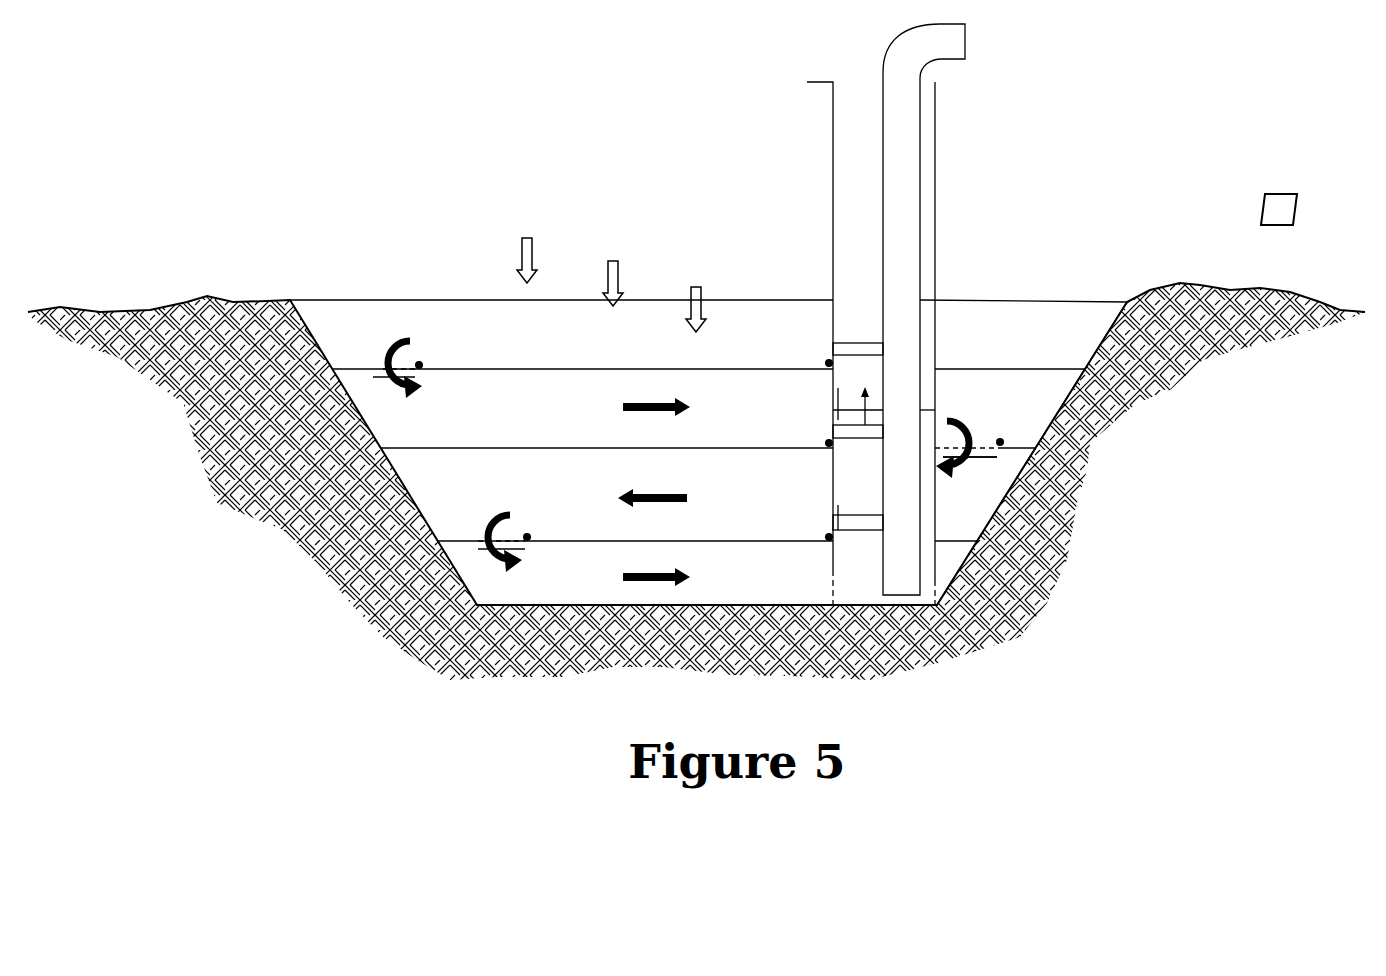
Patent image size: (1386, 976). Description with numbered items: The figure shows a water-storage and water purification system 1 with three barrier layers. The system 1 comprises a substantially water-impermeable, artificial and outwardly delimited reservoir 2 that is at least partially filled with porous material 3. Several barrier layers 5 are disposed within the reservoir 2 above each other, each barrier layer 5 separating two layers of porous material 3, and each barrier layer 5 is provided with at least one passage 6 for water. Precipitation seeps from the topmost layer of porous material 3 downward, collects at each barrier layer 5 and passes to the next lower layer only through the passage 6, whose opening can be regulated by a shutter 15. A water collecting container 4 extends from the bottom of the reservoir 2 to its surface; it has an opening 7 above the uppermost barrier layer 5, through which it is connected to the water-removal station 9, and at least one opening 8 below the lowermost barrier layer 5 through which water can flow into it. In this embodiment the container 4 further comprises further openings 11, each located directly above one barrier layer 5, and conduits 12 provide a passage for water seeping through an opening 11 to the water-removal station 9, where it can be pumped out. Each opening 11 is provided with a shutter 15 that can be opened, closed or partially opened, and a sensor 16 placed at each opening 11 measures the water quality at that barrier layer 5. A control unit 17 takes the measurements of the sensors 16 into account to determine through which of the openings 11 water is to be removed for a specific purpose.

The system 1 is at (290, 163).
The reservoir 2 is at (1103, 334).
The porous material 3 is at (1045, 394).
The water collecting container 4 is at (935, 160).
The barrier layer 5 is at (1000, 457).
The passage 6 is at (968, 458).
The opening 7 is at (935, 82).
The opening 8 is at (952, 572).
The water-removal station 9 is at (965, 40).
The further opening 11 is at (827, 338).
The conduit 12 is at (857, 342).
The shutter 15 is at (838, 340).
The sensor 16 is at (829, 363).
The control unit 17 is at (1297, 210).